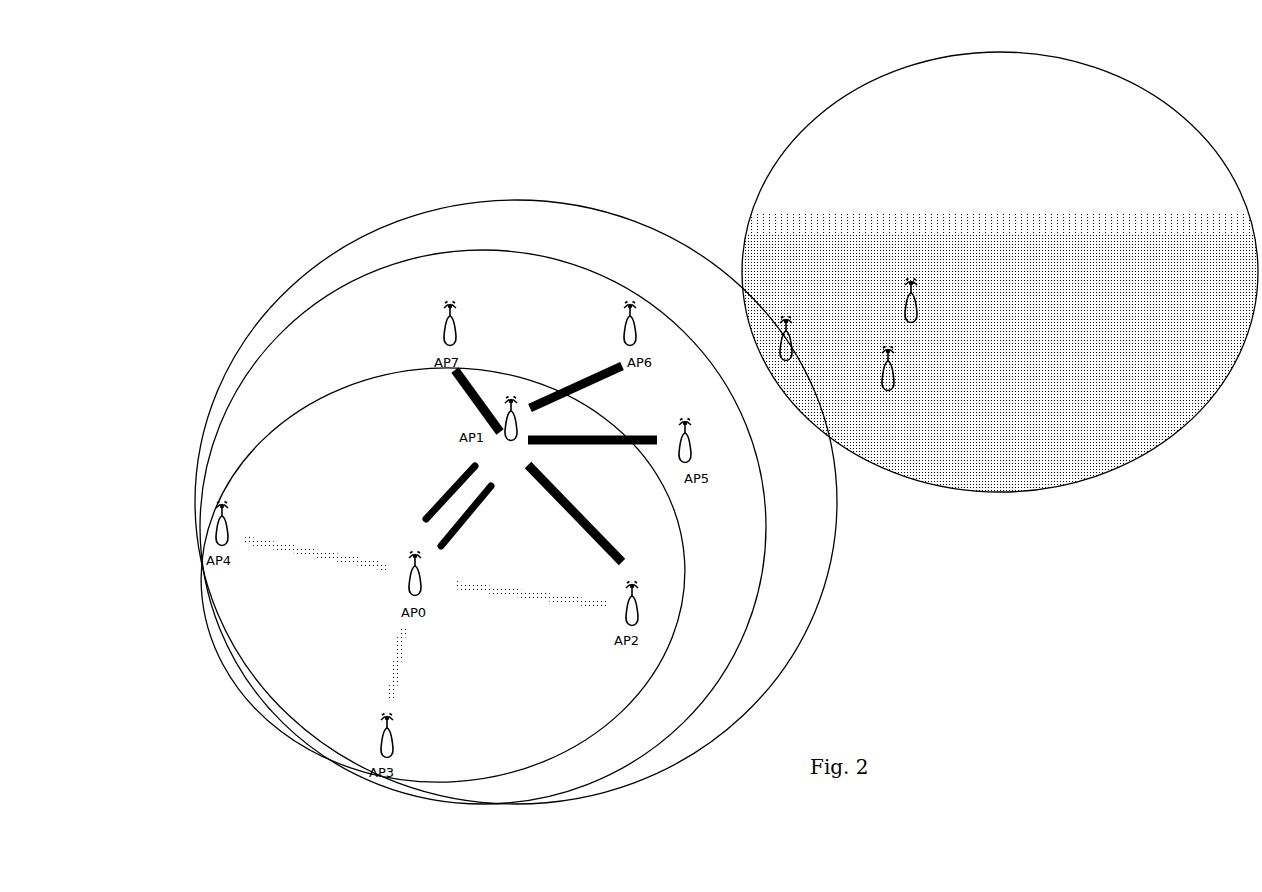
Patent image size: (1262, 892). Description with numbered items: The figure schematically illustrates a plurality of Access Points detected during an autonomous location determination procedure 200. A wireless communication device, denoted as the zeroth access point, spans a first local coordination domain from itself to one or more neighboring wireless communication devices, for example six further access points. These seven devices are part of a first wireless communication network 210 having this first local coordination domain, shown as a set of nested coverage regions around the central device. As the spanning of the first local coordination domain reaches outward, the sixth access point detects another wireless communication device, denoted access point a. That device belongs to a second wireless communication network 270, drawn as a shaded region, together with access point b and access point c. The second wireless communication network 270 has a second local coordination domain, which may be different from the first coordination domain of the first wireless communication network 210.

The autonomous location determination procedure 200 is at (938, 675).
The first wireless communication network 210 is at (253, 698).
The second wireless communication network 270 is at (997, 496).